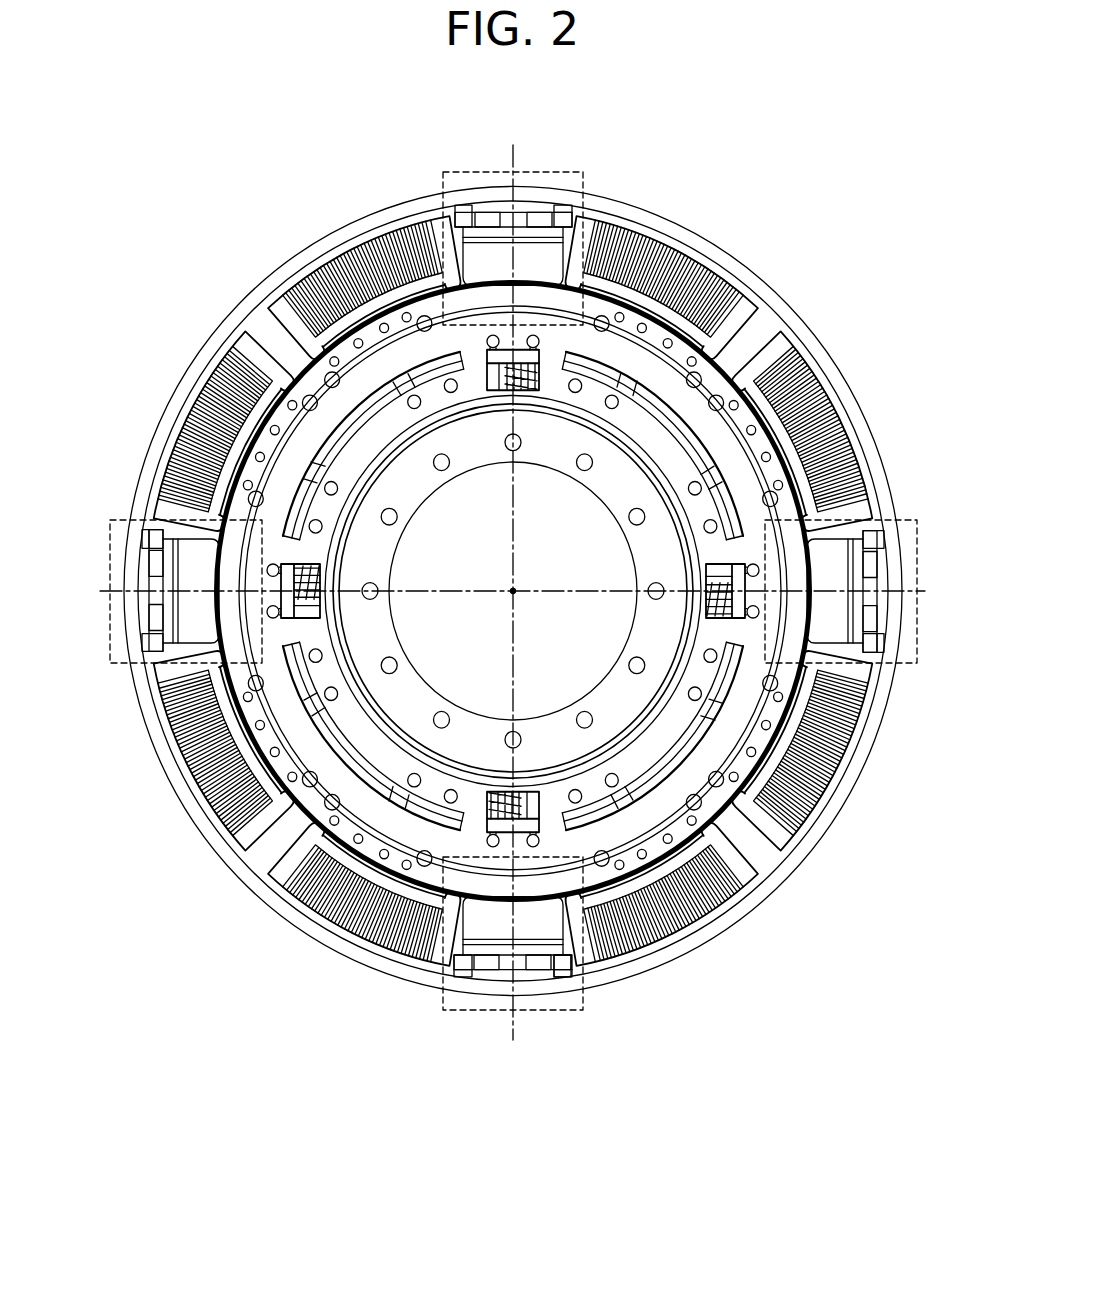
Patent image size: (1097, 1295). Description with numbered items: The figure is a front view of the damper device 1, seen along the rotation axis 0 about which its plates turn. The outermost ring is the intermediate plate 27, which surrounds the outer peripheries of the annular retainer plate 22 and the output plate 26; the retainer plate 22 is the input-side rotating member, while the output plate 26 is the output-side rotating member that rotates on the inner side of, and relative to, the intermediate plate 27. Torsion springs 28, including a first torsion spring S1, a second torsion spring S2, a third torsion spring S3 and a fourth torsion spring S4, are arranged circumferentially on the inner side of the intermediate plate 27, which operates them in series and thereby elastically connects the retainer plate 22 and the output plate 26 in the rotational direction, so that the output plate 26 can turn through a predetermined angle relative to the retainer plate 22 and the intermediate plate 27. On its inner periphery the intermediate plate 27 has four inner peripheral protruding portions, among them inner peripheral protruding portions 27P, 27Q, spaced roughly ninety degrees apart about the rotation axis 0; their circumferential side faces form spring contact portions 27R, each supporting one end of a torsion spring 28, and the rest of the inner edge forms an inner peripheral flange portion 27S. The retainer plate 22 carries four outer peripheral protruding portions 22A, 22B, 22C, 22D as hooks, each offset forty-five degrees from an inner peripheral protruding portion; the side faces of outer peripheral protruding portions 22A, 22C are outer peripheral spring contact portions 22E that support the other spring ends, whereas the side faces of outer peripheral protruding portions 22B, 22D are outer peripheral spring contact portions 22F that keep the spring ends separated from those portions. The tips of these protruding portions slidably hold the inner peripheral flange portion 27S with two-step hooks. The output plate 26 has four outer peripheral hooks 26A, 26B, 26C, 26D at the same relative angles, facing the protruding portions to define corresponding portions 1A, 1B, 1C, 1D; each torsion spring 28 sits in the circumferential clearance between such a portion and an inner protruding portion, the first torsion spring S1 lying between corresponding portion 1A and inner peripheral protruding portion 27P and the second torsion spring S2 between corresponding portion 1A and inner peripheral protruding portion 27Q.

The damper device 1 is at (243, 1082).
The rotation axis 0 is at (523, 606).
The corresponding portion 1A is at (478, 170).
The corresponding portion 1B is at (915, 520).
The corresponding portion 1C is at (522, 962).
The corresponding portion 1D is at (112, 520).
The retainer plate 22 is at (531, 214).
The outer peripheral protruding portion 22A is at (509, 199).
The outer peripheral protruding portion 22B is at (890, 504).
The outer peripheral protruding portion 22C is at (508, 1019).
The outer peripheral protruding portion 22D is at (135, 630).
The outer peripheral spring contact portion 22E is at (560, 228).
The outer peripheral spring contact portion 22F is at (838, 655).
The output plate 26 is at (650, 445).
The outer peripheral hook 26A is at (541, 250).
The outer peripheral hook 26B is at (835, 605).
The outer peripheral hook 26C is at (500, 935).
The outer peripheral hook 26D is at (190, 583).
The intermediate plate 27 is at (250, 283).
The inner peripheral protruding portion 27P is at (750, 345).
The inner peripheral protruding portion 27Q is at (270, 343).
The spring contact portion 27R is at (775, 835).
The inner peripheral flange portion 27S is at (700, 893).
The torsion spring 28 is at (660, 256).
The first torsion spring S1 is at (607, 333).
The second torsion spring S2 is at (378, 257).
The third torsion spring S3 is at (792, 468).
The fourth torsion spring S4 is at (805, 790).